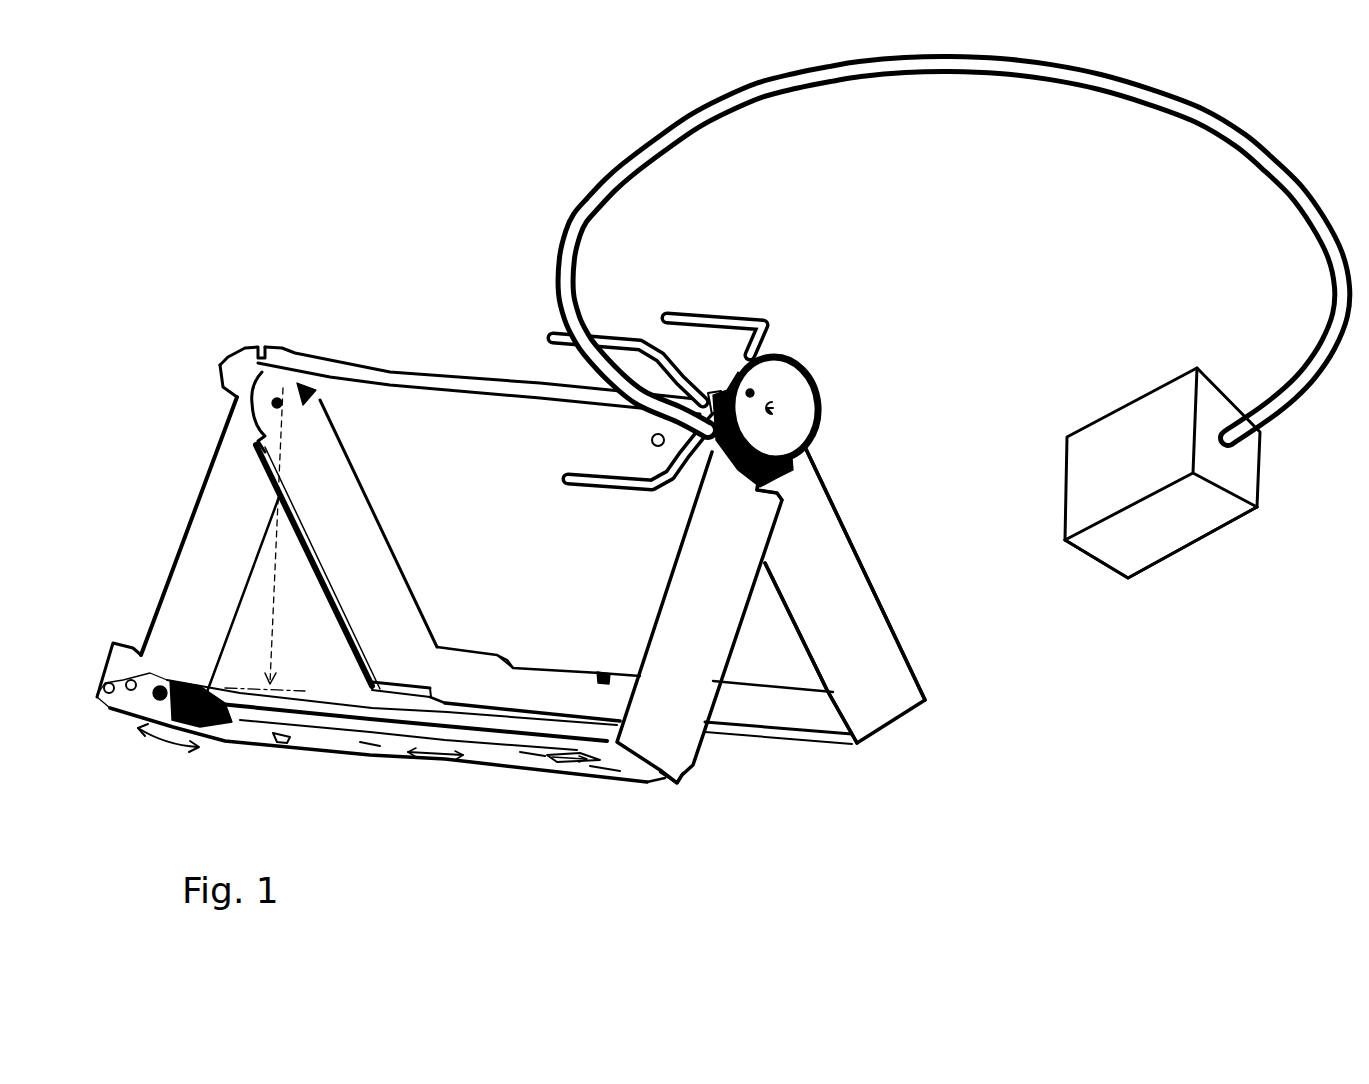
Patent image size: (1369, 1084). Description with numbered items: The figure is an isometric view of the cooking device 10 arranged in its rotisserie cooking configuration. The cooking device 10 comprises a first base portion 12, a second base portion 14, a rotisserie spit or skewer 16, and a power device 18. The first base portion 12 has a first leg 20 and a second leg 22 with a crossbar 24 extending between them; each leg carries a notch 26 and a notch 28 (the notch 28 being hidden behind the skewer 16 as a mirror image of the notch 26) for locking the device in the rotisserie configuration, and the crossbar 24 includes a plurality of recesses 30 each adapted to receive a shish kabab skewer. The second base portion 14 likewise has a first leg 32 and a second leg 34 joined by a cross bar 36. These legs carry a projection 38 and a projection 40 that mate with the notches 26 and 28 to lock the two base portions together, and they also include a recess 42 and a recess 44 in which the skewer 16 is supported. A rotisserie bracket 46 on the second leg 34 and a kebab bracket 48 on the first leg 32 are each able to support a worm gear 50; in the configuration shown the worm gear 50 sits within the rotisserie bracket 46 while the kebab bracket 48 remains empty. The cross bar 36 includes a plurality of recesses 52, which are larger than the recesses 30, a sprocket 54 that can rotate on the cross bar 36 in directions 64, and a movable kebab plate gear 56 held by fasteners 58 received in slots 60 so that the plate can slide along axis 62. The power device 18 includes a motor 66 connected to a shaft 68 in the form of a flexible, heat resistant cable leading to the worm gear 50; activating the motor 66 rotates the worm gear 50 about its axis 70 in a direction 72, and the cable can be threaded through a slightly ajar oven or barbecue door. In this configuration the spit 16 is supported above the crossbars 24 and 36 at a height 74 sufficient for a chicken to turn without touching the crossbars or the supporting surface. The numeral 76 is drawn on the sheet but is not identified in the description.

The cooking device 10 is at (893, 328).
The first base portion 12 is at (845, 552).
The second base portion 14 is at (690, 583).
The rotisserie spit or skewer 16 is at (395, 372).
The power device 18 is at (1128, 415).
The first leg 20 is at (370, 500).
The second leg 22 is at (867, 603).
The crossbar 24 is at (460, 662).
The notch 26 is at (300, 416).
The notch 28 is at (816, 419).
The recesses 30 is at (500, 670).
The first leg 32 is at (215, 498).
The second leg 34 is at (713, 660).
The cross bar 36 is at (507, 752).
The projection 38 is at (305, 385).
The projection 40 is at (823, 447).
The recess 42 is at (265, 345).
The recess 44 is at (833, 387).
The rotisserie bracket 46 is at (780, 492).
The kebab bracket 48 is at (122, 708).
The worm gear 50 is at (755, 478).
The recesses 52 is at (283, 760).
The sprocket 54 is at (173, 680).
The kebab plate gear 56 is at (620, 768).
The fasteners 58 is at (549, 772).
The slots 60 is at (582, 777).
The axis 62 is at (432, 767).
The directions 64 is at (167, 745).
The motor 66 is at (1190, 527).
The shaft 68 is at (1268, 158).
The axis 70 is at (647, 423).
The direction 72 is at (662, 452).
The height 74 is at (276, 620).
The slot 76 is at (473, 702).